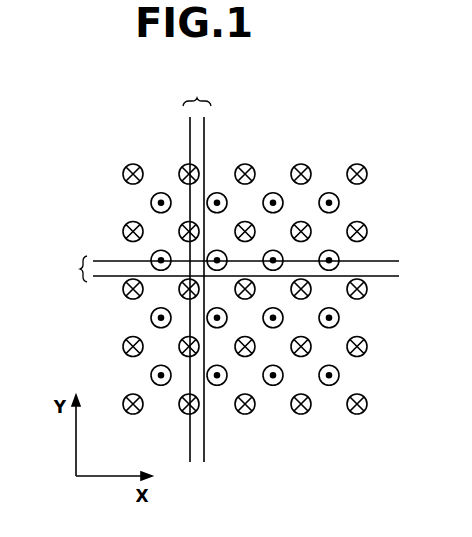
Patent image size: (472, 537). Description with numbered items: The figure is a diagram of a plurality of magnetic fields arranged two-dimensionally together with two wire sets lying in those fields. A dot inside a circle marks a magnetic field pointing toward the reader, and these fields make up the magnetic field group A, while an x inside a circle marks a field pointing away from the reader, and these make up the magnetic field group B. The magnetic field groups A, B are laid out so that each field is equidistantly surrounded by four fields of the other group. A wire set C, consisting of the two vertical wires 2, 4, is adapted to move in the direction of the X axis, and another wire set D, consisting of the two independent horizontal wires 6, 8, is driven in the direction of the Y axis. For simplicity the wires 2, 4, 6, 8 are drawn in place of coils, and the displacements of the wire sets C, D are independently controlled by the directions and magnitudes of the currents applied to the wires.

The wire 2 is at (190, 449).
The wire 4 is at (204, 449).
The wire 6 is at (390, 276).
The wire 8 is at (382, 261).
The magnetic field group A is at (328, 386).
The magnetic field group B is at (299, 414).
The wire set C is at (197, 90).
The wire set D is at (74, 269).